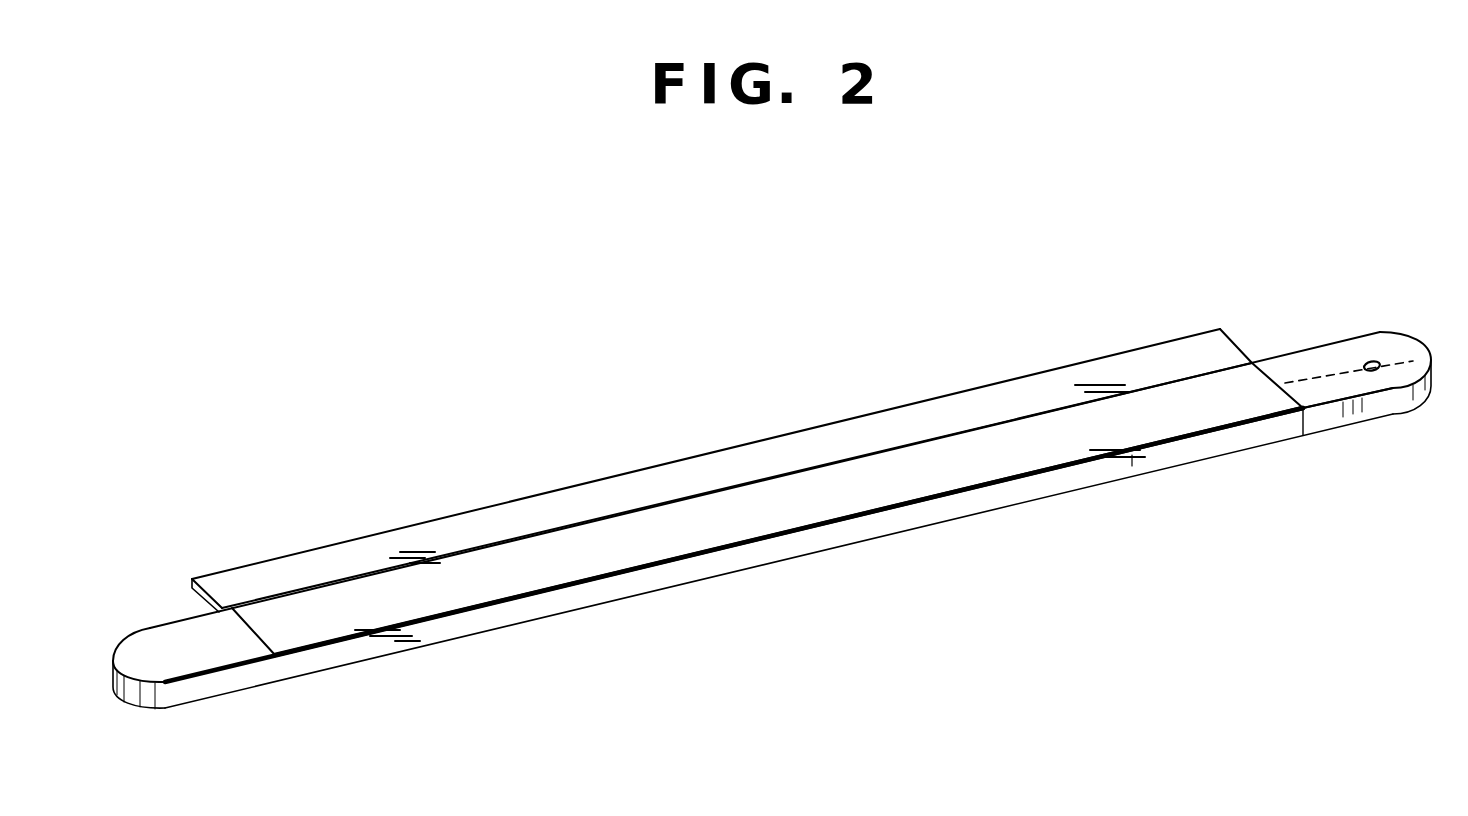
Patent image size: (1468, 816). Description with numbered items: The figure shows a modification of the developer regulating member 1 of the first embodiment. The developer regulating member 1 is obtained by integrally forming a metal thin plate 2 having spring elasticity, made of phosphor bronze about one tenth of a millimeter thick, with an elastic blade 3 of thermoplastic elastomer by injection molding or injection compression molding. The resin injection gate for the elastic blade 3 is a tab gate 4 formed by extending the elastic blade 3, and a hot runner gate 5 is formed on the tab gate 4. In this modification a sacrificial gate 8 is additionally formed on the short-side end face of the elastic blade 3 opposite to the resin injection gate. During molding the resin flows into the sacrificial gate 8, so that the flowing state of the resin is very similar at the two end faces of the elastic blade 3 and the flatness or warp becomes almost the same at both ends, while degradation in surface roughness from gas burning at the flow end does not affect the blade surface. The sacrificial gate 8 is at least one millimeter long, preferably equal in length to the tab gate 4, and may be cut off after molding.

The developer regulating member 1 is at (791, 262).
The metal thin plate 2 is at (592, 498).
The elastic blade 3 is at (623, 540).
The tab gate 4 is at (1347, 348).
The hot runner gate 5 is at (1375, 370).
The sacrificial gate 8 is at (182, 658).